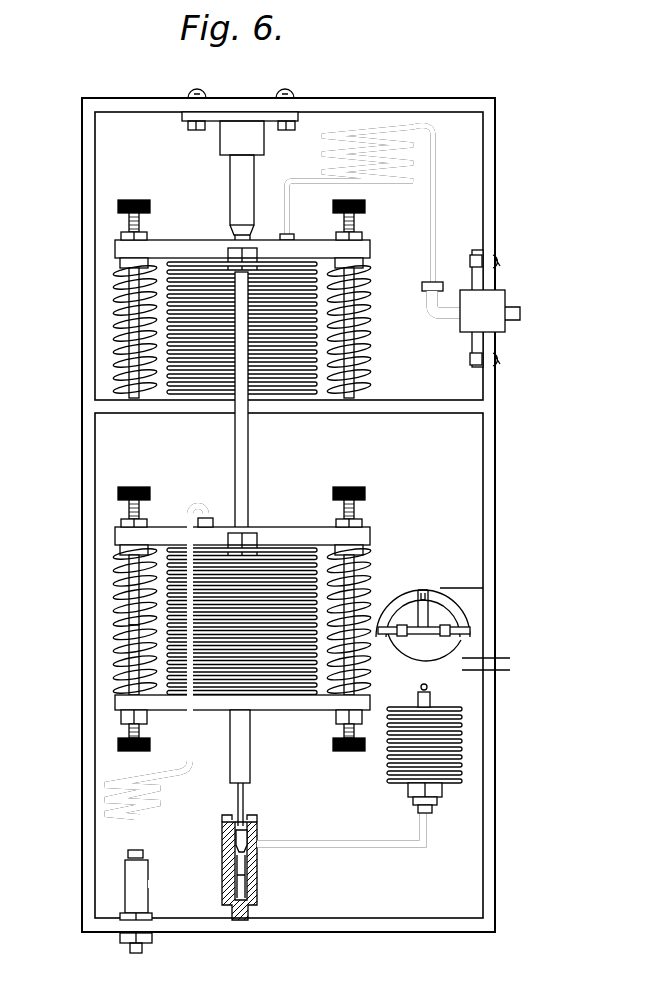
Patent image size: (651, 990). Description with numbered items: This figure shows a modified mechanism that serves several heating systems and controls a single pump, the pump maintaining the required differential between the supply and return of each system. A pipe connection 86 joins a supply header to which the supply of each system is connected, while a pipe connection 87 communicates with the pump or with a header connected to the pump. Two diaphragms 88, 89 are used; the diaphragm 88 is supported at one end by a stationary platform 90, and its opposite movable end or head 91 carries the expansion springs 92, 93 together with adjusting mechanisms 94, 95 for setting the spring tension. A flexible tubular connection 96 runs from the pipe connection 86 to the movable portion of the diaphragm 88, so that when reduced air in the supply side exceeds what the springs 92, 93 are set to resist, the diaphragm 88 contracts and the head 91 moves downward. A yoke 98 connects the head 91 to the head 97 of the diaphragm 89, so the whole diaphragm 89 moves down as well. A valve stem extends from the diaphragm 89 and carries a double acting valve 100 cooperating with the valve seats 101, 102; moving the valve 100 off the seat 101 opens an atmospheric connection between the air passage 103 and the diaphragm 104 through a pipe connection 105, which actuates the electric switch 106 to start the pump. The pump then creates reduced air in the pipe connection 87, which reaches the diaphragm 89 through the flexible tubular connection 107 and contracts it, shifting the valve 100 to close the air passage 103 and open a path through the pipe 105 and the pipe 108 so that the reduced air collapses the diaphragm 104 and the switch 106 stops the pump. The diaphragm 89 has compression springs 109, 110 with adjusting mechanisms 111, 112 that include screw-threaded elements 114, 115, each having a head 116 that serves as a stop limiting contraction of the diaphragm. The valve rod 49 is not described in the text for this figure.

The valve rod 49 is at (247, 799).
The pipe connection 86 is at (512, 318).
The pipe connection 87 is at (118, 947).
The diaphragm 88 is at (210, 380).
The diaphragm 89 is at (272, 555).
The platform 90 is at (422, 418).
The movable end or head 91 is at (176, 244).
The expansion spring 92 is at (368, 316).
The expansion spring 93 is at (112, 352).
The adjusting mechanism 94 is at (362, 236).
The adjusting mechanism 95 is at (138, 200).
The flexible tubular connection 96 is at (431, 197).
The head 97 is at (290, 530).
The yoke 98 is at (251, 452).
The double acting valve 100 is at (255, 838).
The valve seat 101 is at (220, 867).
The valve seat 102 is at (257, 860).
The air passage 103 is at (246, 812).
The diaphragm 104 is at (388, 772).
The pipe connection 105 is at (354, 844).
The electric switch 106 is at (436, 600).
The flexible tubular connection 107 is at (150, 782).
The pipe 108 is at (186, 880).
The compression spring 109 is at (370, 575).
The compression spring 110 is at (120, 595).
The adjusting mechanism 111 is at (140, 488).
The adjusting mechanism 112 is at (118, 738).
The screw-threaded element 114 is at (118, 660).
The screw-threaded element 115 is at (120, 566).
The head 116 is at (120, 603).